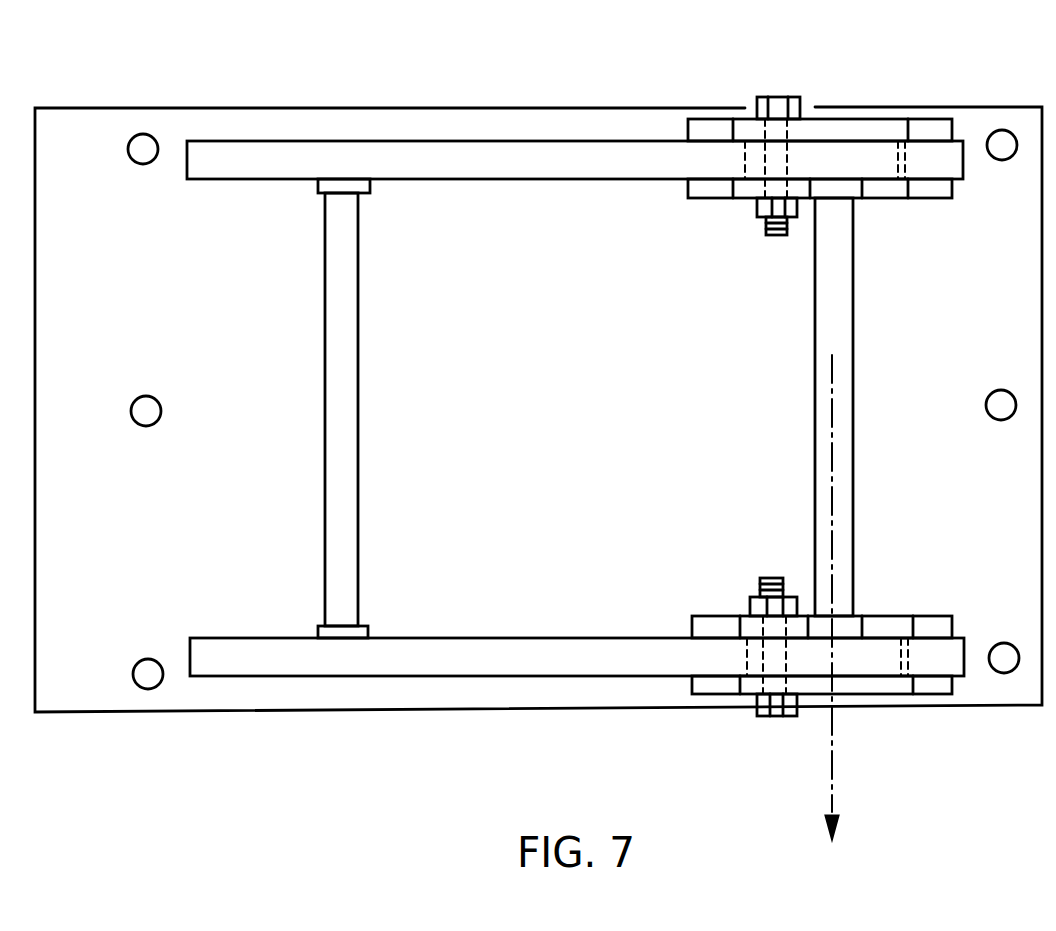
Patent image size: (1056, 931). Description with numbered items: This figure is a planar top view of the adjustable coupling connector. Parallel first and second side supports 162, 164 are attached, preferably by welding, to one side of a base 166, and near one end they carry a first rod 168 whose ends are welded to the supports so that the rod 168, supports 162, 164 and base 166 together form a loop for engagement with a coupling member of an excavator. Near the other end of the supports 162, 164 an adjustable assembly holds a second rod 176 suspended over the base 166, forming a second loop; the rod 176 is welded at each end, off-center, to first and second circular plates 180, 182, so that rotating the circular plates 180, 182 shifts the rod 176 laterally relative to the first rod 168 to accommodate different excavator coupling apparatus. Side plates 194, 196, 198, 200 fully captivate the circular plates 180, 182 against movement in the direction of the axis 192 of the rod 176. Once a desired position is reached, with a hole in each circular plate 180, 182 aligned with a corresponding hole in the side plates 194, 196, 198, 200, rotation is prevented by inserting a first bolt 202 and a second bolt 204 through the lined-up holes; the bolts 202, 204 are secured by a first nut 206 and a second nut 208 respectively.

The first side support 162 is at (478, 663).
The second side support 164 is at (410, 158).
The base 166 is at (175, 700).
The first rod 168 is at (350, 548).
The second rod 176 is at (843, 317).
The first circular plate 180 is at (884, 182).
The second circular plate 182 is at (884, 630).
The axis 192 is at (832, 777).
The side plate 194 is at (880, 128).
The side plate 196 is at (928, 187).
The side plate 198 is at (925, 624).
The side plate 200 is at (930, 685).
The first bolt 202 is at (800, 104).
The second bolt 204 is at (760, 718).
The first nut 206 is at (760, 208).
The second nut 208 is at (755, 602).